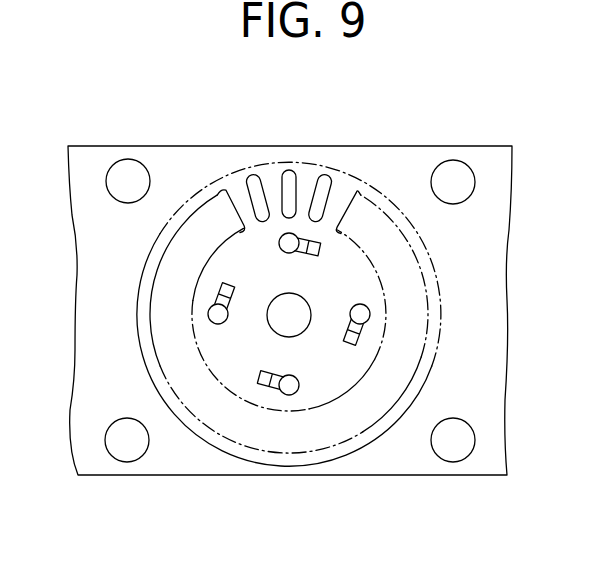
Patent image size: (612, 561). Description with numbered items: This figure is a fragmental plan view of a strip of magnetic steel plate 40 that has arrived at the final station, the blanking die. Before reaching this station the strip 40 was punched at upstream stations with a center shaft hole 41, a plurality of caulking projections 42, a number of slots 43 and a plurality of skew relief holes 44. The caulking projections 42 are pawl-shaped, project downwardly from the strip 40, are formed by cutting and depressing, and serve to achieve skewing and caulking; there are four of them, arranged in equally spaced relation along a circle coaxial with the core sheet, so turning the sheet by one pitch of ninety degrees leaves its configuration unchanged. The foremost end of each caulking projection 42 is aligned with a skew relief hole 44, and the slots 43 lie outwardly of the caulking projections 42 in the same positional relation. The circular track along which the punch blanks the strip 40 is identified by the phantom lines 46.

The strip of steel plate 40 is at (462, 147).
The center shaft hole 41 is at (278, 326).
The caulking projections 42 is at (262, 387).
The slots 43 is at (253, 176).
The skew relief holes 44 is at (290, 388).
The phantom lines 46 is at (320, 160).